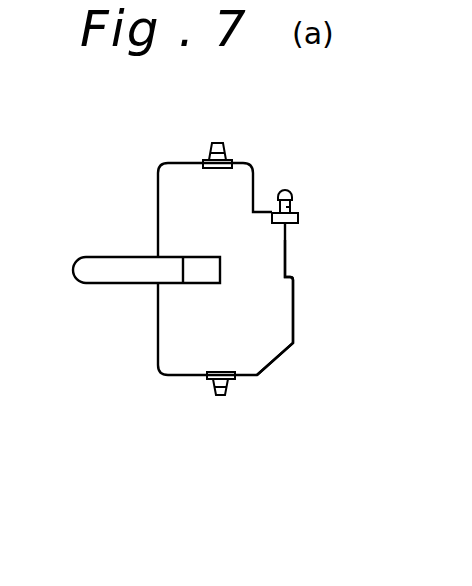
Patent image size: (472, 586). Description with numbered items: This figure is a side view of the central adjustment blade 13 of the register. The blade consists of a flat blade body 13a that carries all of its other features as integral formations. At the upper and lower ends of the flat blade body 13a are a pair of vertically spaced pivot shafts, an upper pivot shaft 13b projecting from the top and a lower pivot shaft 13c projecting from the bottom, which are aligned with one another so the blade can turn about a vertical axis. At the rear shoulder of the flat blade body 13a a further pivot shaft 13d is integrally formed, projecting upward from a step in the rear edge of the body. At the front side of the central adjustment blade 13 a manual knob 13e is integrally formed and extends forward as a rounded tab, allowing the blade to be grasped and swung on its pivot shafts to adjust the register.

The central adjustment blade 13 is at (158, 197).
The flat blade body 13a is at (280, 292).
The upper pivot shaft 13b is at (225, 146).
The lower pivot shaft 13c is at (222, 394).
The pivot shaft 13d is at (295, 208).
The manual knob 13e is at (115, 273).